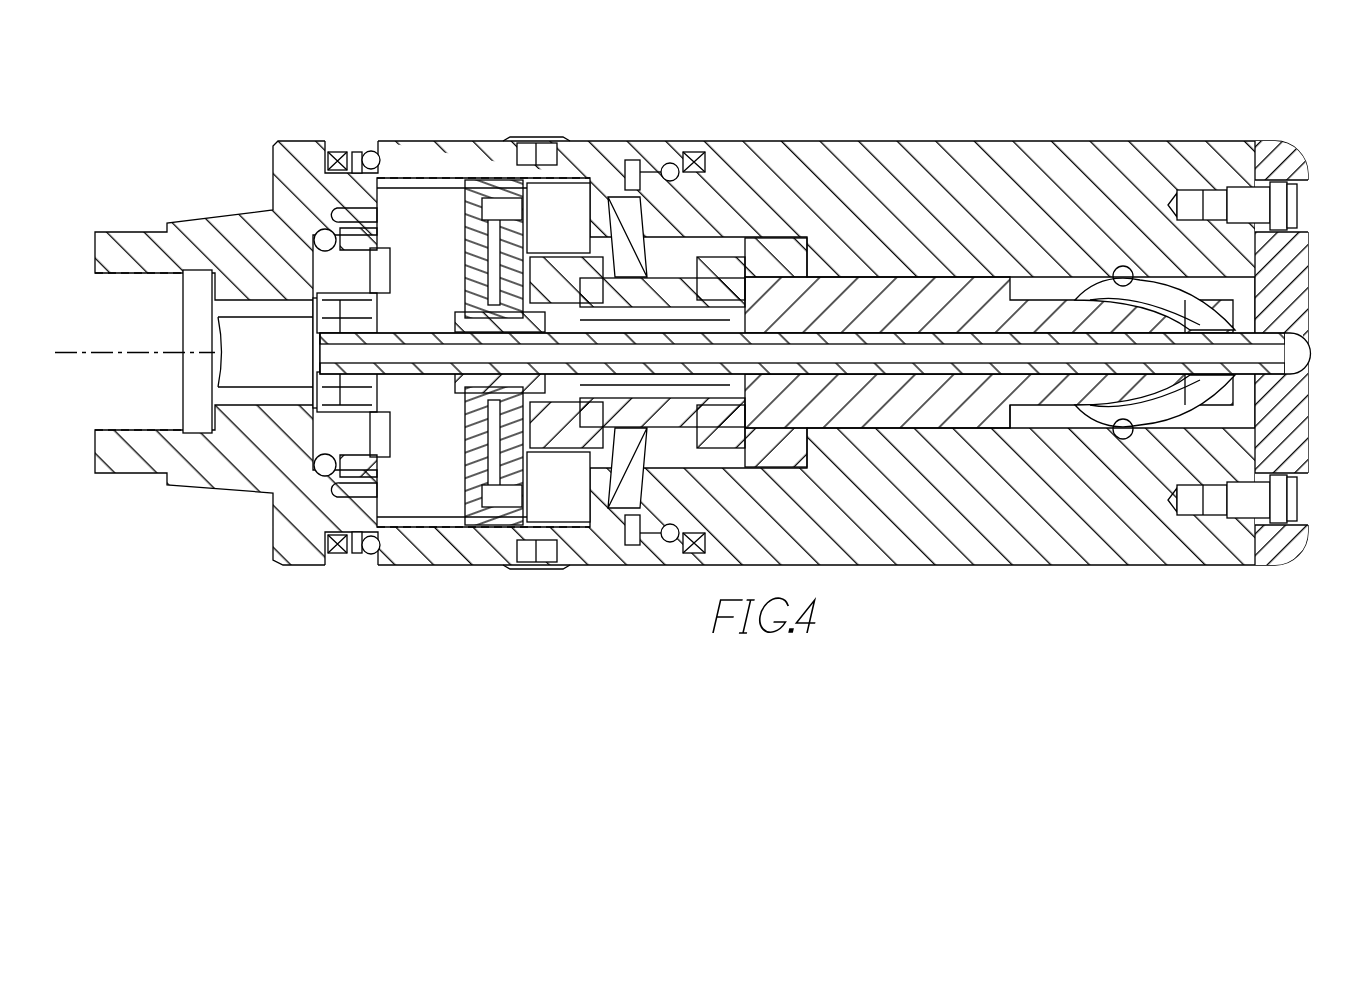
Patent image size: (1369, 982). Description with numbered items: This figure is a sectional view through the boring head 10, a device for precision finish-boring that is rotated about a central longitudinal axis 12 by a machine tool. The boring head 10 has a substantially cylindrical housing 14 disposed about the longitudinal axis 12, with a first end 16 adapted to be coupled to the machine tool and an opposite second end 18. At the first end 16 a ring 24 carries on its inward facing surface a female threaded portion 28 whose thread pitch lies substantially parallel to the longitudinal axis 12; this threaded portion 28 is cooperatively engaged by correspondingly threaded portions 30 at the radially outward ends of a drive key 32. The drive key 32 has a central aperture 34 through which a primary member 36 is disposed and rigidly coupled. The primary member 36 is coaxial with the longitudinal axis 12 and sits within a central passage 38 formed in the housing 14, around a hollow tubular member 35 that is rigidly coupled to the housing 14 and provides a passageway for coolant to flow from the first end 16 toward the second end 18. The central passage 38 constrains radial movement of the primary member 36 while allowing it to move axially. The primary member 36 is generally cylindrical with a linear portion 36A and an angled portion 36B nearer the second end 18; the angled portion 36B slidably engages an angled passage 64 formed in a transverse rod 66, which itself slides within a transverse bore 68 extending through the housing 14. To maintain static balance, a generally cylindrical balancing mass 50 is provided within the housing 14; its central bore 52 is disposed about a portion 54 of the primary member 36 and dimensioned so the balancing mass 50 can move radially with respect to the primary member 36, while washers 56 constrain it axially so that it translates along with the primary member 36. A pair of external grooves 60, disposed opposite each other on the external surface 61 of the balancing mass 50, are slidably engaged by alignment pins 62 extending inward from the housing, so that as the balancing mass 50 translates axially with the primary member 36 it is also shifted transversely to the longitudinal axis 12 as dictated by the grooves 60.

The boring head 10 is at (727, 86).
The central longitudinal axis 12 is at (68, 350).
The housing 14 is at (840, 141).
The first end 16 is at (178, 192).
The second end 18 is at (1325, 508).
The ring 24 is at (405, 140).
The threaded portion 28 is at (548, 192).
The threaded portions 30 is at (470, 174).
The drive key 32 is at (470, 237).
The central aperture 34 is at (470, 325).
The hollow tubular member 35 is at (915, 374).
The primary member 36 is at (835, 430).
The linear portion 36A is at (920, 284).
The angled portion 36B is at (1072, 310).
The central passage 38 is at (1045, 430).
The balancing mass 50 is at (705, 442).
The central bore 52 is at (690, 262).
The portion of primary member 54 is at (580, 400).
The washers 56 is at (755, 265).
The external grooves 60 is at (650, 432).
The external surface 61 is at (666, 245).
The alignment pins 62 is at (630, 165).
The angled passage 64 is at (1256, 395).
The transverse rod 66 is at (1215, 320).
The transverse bore 68 is at (1125, 285).